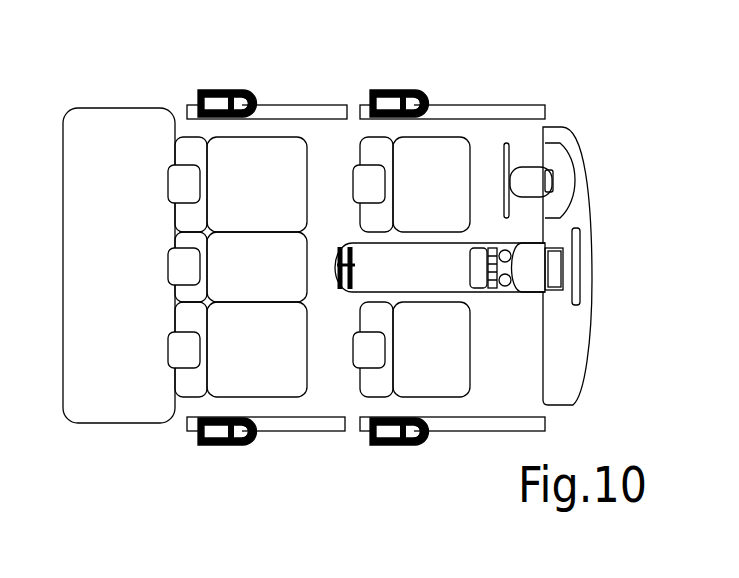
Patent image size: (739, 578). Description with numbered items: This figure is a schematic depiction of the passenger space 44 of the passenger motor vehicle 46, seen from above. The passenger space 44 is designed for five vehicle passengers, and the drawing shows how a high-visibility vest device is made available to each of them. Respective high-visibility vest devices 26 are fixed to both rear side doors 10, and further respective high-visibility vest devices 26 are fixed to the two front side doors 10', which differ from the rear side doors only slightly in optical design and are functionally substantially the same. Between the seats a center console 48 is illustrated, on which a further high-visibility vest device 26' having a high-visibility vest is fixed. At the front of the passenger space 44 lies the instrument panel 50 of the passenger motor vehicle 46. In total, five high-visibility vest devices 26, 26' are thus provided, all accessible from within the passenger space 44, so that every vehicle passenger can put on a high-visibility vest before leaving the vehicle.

The rear side door 10 is at (271, 272).
The front side door 10' is at (452, 273).
The high-visibility vest device 26 is at (311, 271).
The further high-visibility vest device 26' is at (333, 307).
The passenger space 44 is at (342, 189).
The passenger motor vehicle 46 is at (604, 190).
The center console 48 is at (450, 280).
The instrument panel 50 is at (568, 367).